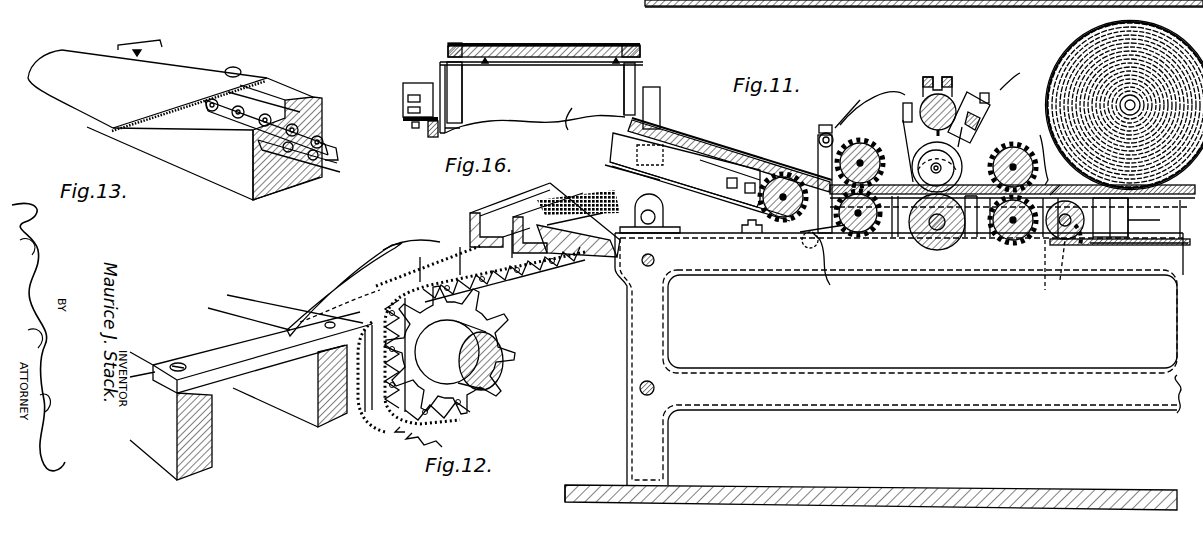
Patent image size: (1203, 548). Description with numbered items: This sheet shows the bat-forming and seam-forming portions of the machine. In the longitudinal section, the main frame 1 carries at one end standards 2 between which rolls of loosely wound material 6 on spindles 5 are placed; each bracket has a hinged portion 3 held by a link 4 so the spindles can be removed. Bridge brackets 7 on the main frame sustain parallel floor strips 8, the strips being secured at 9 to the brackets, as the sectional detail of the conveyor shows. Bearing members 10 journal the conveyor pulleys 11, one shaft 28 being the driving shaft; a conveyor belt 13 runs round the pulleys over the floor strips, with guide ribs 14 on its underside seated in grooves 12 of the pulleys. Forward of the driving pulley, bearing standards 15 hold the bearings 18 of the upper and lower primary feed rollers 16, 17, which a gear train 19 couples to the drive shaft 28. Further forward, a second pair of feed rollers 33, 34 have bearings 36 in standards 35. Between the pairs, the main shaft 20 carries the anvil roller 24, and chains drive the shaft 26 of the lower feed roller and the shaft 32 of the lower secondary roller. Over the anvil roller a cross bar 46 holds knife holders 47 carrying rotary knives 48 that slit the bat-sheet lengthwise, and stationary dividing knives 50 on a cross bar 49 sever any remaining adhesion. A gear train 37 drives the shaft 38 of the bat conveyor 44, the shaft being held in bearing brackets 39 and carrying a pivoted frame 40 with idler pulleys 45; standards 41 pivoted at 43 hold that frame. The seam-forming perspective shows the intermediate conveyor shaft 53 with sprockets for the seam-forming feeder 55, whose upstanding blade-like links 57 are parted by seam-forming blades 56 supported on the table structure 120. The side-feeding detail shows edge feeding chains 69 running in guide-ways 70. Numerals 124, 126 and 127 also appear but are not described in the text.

In FIG. 11, the main frame 1 is at (1082, 377).
In FIG. 11, the standard 2 is at (1120, 221).
In FIG. 11, the hinged portion 3 is at (1168, 214).
In FIG. 11, the link 4 is at (1160, 22).
In FIG. 11, the spindle 5 is at (1058, 70).
In FIG. 11, the material 6 is at (1050, 85).
In FIG. 16, the bridge bracket 7 is at (543, 65).
In FIG. 16, the floor strip 8 is at (569, 45).
In FIG. 16, the securing point 9 is at (613, 66).
In FIG. 16, the bearing member 10 is at (423, 83).
In FIG. 16, the conveyor pulley 11 is at (521, 127).
In FIG. 11, the conveyor pulley 11 is at (1055, 246).
In FIG. 16, the groove 12 is at (463, 100).
In FIG. 11, the groove 12 is at (672, 180).
In FIG. 16, the conveyor belt 13 is at (512, 44).
In FIG. 11, the conveyor belt 13 is at (1185, 183).
In FIG. 16, the guide rib 14 is at (638, 44).
In FIG. 11, the bearing standard 15 is at (1037, 151).
In FIG. 11, the upper primary feed roller 16 is at (1064, 181).
In FIG. 11, the lower primary feed roller 17 is at (1008, 242).
In FIG. 11, the bearing 18 is at (1013, 164).
In FIG. 11, the gear train 19 is at (1063, 272).
In FIG. 11, the main shaft 20 is at (948, 250).
In FIG. 11, the anvil roller 24 is at (920, 248).
In FIG. 11, the drive shaft 26 is at (1015, 243).
In FIG. 11, the drive shaft 28 is at (1078, 240).
In FIG. 11, the shaft 32 is at (818, 165).
In FIG. 11, the upper secondary feed roller 33 is at (862, 145).
In FIG. 11, the lower secondary feed roller 34 is at (858, 232).
In FIG. 11, the standard 35 is at (830, 266).
In FIG. 11, the bearing 36 is at (912, 160).
In FIG. 11, the gear train 37 is at (872, 107).
In FIG. 11, the drive shaft 38 is at (782, 222).
In FIG. 11, the bearing bracket 39 is at (745, 233).
In FIG. 11, the frame 40 is at (735, 152).
In FIG. 11, the standard 41 is at (660, 107).
In FIG. 11, the pivot 43 is at (642, 207).
In FIG. 11, the bat conveyor 44 is at (730, 200).
In FIG. 11, the idler pulley 45 is at (755, 165).
In FIG. 11, the cross bar 46 is at (958, 80).
In FIG. 11, the knife holder 47 is at (984, 106).
In FIG. 11, the rotary knife 48 is at (920, 105).
In FIG. 11, the cross bar 49 is at (873, 114).
In FIG. 11, the stationary dividing knife 50 is at (819, 140).
In FIG. 12, the intermediate conveyor shaft 53 is at (503, 360).
In FIG. 12, the seam-forming feeder 55 is at (540, 282).
In FIG. 12, the seam-forming blade 56 is at (410, 243).
In FIG. 12, the blade-like link 57 is at (480, 232).
In FIG. 13, the edge feeding chain 69 is at (335, 138).
In FIG. 13, the guide-way 70 is at (275, 195).
In FIG. 12, the table structure 120 is at (232, 342).
In FIG. 11, the member 124 is at (810, 3).
In FIG. 11, the member 126 is at (700, 3).
In FIG. 11, the member 127 is at (755, 3).